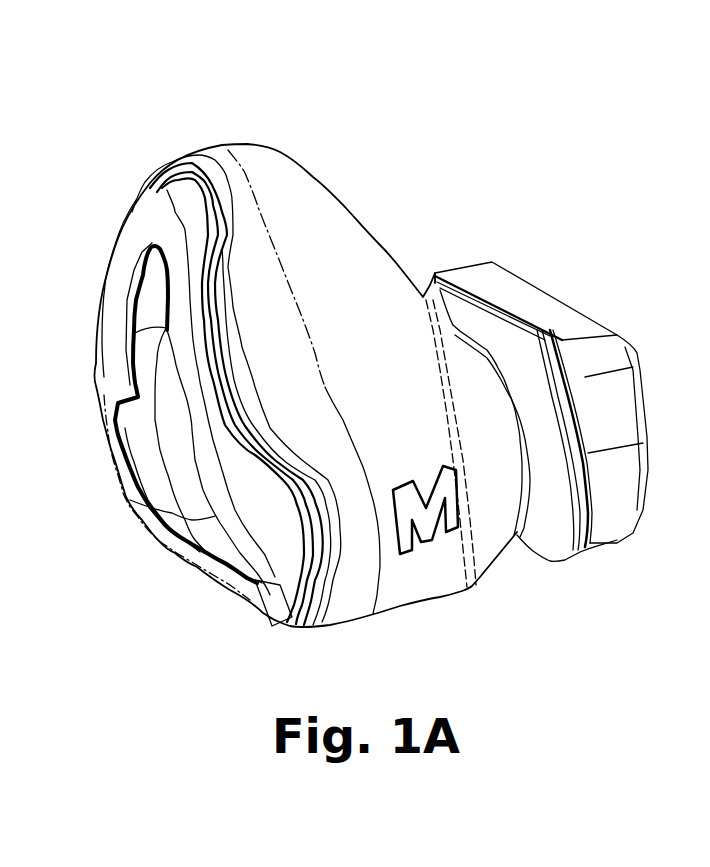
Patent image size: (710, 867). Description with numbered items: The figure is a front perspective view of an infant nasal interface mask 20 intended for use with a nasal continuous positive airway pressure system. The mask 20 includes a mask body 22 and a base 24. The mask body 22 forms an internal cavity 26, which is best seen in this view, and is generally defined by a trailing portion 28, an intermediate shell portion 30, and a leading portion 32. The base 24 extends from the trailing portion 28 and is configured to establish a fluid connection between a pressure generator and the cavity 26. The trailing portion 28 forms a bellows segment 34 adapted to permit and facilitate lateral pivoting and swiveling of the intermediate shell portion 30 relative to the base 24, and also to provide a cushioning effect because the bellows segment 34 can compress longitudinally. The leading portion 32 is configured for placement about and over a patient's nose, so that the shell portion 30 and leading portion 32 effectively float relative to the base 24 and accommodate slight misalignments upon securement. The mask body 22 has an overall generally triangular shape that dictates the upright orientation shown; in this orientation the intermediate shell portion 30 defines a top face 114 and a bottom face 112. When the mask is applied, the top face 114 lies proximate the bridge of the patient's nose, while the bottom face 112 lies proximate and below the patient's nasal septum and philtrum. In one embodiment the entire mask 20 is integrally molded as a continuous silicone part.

The infant nasal interface mask 20 is at (481, 108).
The mask body 22 is at (312, 630).
The base 24 is at (560, 293).
The internal cavity 26 is at (195, 489).
The trailing portion 28 is at (558, 548).
The intermediate shell portion 30 is at (403, 592).
The leading portion 32 is at (237, 597).
The bellows segment 34 is at (520, 540).
The bottom face 112 is at (375, 615).
The top face 114 is at (260, 168).